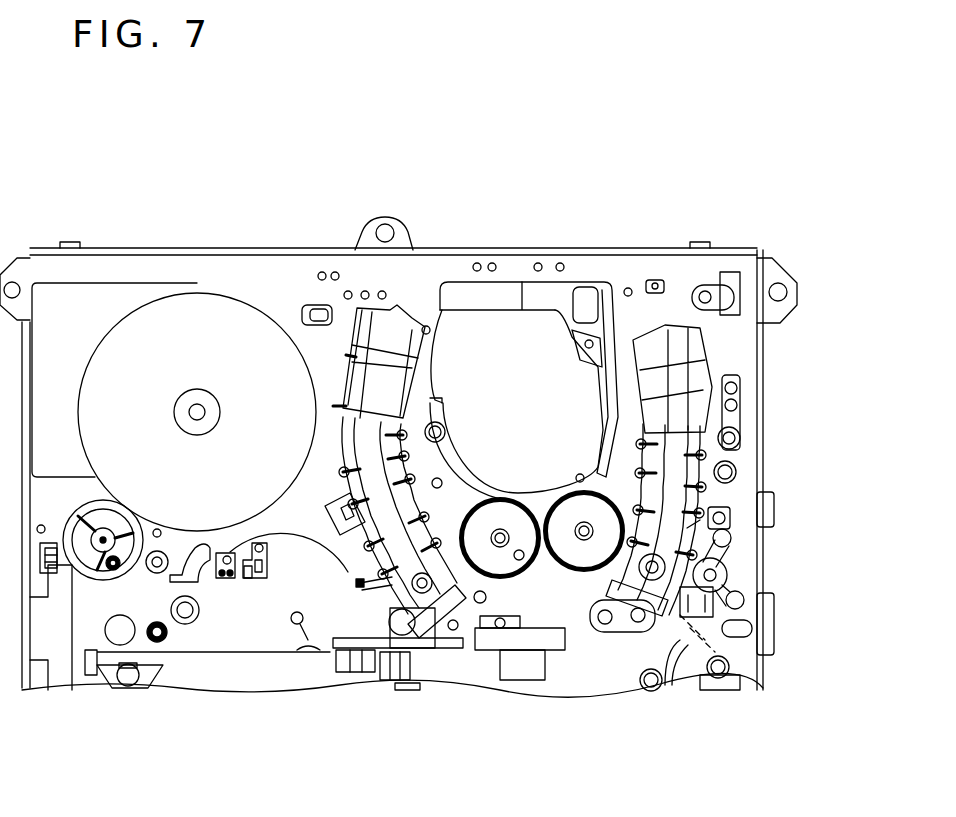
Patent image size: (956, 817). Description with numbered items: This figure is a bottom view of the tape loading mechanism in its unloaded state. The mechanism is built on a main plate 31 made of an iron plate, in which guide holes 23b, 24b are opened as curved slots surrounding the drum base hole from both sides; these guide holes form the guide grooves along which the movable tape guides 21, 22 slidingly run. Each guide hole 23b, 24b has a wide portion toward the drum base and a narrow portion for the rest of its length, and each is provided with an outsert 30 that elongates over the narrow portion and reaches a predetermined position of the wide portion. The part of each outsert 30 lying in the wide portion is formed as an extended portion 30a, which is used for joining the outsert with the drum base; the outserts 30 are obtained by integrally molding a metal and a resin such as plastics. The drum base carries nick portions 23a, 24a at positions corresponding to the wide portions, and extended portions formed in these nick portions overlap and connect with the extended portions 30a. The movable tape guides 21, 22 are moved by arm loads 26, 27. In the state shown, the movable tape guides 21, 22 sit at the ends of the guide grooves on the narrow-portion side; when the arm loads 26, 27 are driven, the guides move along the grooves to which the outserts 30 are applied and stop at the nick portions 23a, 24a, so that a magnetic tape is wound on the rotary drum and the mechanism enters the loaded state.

The movable tape guide 21 is at (648, 582).
The movable tape guide 22 is at (430, 602).
The nick portion 23a is at (677, 382).
The guide hole 23b is at (672, 490).
The nick portion 24a is at (383, 363).
The guide hole 24b is at (350, 488).
The arm load 26 is at (492, 558).
The arm load 27 is at (585, 560).
The outsert 30 is at (687, 528).
The extended portion 30a is at (400, 395).
The main plate 31 is at (640, 268).